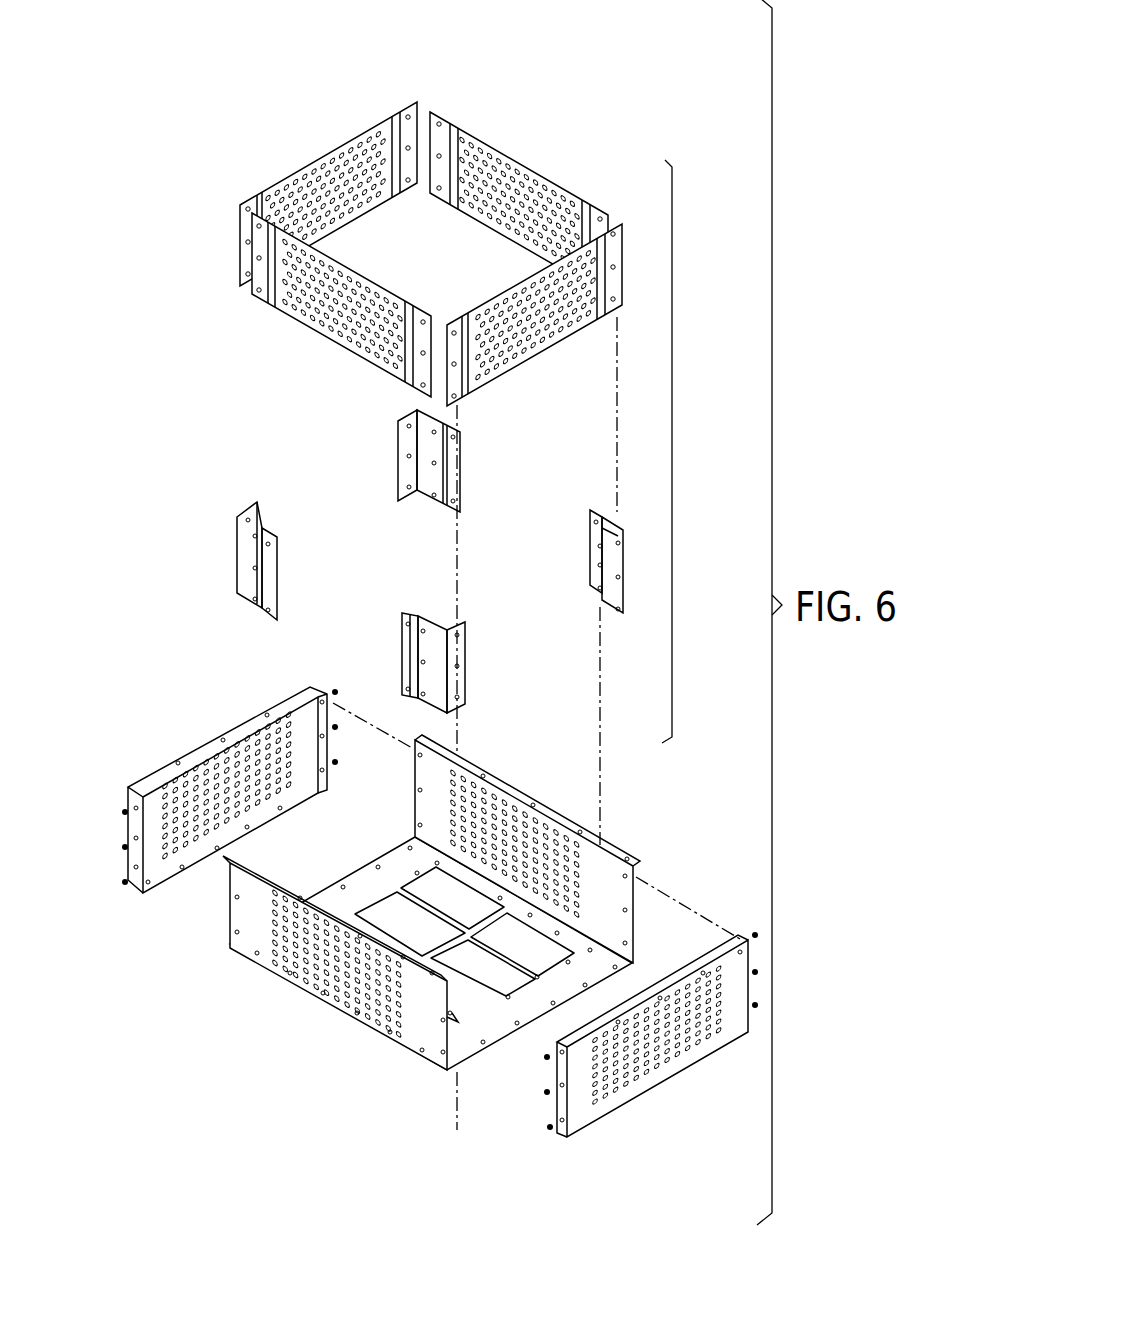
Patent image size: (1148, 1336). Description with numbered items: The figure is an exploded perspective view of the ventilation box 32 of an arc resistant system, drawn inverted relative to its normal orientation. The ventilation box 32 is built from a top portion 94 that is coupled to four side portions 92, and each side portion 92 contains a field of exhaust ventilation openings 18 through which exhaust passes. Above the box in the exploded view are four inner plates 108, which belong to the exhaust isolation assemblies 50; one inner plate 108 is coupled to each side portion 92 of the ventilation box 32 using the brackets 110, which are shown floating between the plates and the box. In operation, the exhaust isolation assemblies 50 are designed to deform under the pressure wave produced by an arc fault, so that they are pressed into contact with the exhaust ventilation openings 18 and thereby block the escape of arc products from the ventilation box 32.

The ventilation box 32 is at (440, 596).
The inner plate 108 is at (327, 154).
The bracket 110 is at (397, 457).
The side portion 92 is at (440, 912).
The exhaust ventilation opening 18 is at (287, 800).
The top portion 94 is at (508, 1029).
The exhaust isolation assembly 50 is at (672, 443).